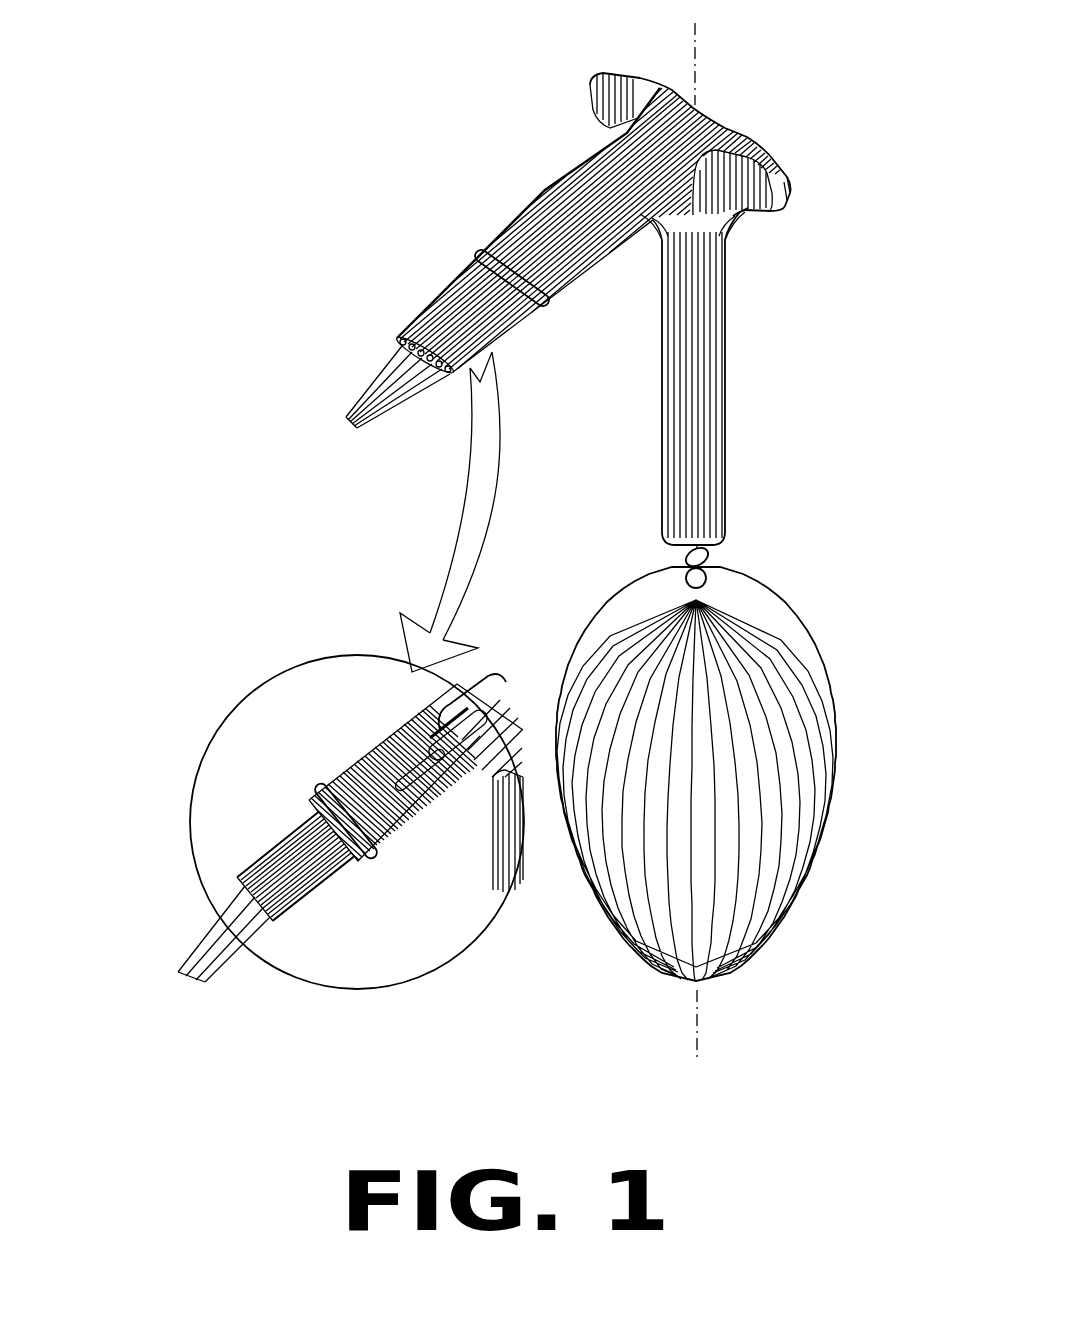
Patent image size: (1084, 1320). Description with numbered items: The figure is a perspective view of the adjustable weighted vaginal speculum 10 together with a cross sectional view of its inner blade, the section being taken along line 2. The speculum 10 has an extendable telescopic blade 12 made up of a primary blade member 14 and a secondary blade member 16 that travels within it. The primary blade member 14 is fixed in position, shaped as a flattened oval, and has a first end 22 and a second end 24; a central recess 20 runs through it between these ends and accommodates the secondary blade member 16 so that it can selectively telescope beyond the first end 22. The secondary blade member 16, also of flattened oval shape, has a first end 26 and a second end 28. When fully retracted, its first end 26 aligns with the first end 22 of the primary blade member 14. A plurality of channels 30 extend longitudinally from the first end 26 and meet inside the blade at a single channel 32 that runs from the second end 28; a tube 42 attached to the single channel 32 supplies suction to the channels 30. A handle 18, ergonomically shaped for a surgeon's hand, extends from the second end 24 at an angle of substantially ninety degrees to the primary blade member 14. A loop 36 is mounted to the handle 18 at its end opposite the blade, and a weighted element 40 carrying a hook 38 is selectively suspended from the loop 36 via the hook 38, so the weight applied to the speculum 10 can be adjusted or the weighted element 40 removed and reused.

The section line 2 is at (697, 55).
The adjustable weighted vaginal speculum 10 is at (262, 498).
The extendable telescopic blade 12 is at (470, 75).
The primary blade member 14 is at (598, 170).
The secondary blade member 16 is at (450, 303).
The handle 18 is at (722, 372).
The central recess 20 is at (490, 730).
The first end 22 is at (476, 253).
The second end 24 is at (737, 217).
The first end 26 is at (395, 340).
The second end 28 is at (420, 720).
The plurality of channels 30 is at (180, 970).
The single channel 32 is at (433, 773).
The loop 36 is at (717, 550).
The hook 38 is at (727, 568).
The weighted element 40 is at (777, 898).
The tube 42 is at (445, 715).